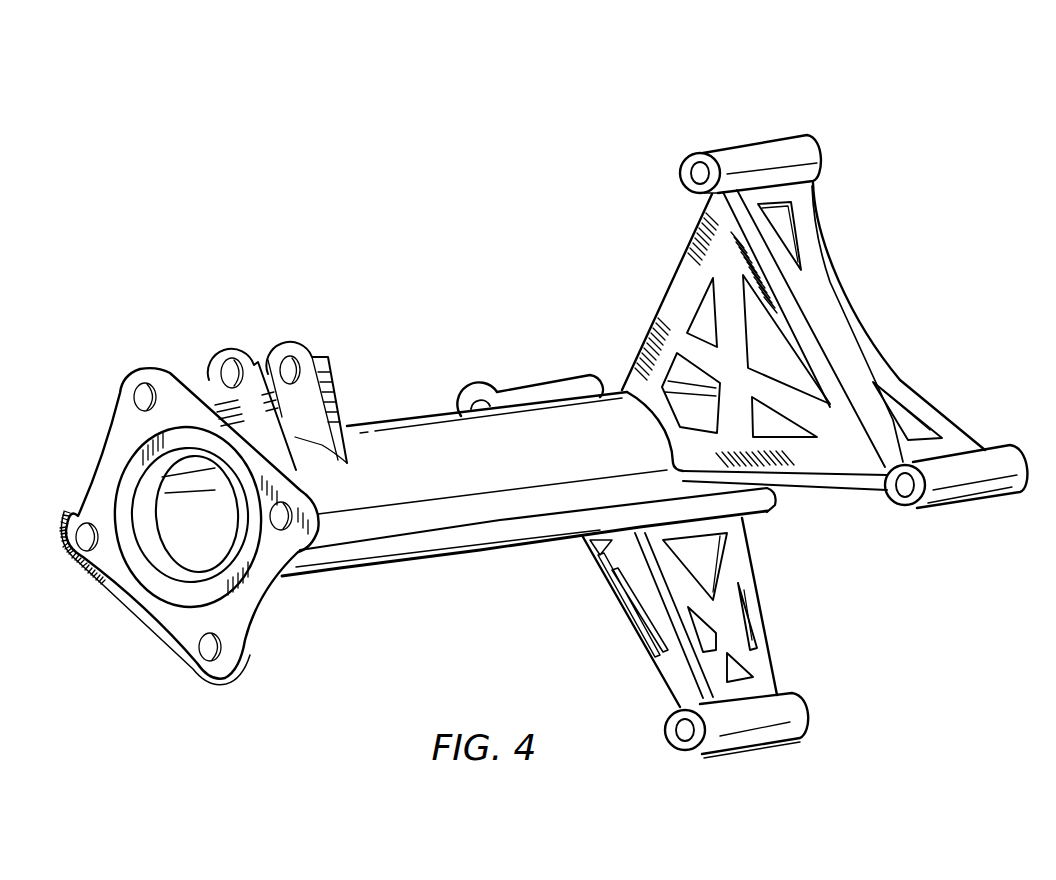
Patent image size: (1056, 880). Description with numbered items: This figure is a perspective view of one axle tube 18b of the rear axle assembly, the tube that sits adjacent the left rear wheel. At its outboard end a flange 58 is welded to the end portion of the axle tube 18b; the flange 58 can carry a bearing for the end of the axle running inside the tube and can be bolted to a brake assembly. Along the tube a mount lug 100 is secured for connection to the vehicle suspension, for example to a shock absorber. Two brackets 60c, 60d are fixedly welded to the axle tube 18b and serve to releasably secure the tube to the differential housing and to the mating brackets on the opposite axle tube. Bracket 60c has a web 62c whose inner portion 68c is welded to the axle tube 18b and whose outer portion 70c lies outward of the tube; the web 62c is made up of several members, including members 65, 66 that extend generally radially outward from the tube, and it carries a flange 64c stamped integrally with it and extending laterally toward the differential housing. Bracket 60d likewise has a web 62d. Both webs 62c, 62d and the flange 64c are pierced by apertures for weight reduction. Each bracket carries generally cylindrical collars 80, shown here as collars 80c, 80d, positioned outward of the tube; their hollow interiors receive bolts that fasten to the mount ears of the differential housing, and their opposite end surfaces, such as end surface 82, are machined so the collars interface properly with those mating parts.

The axle tube 18b is at (392, 570).
The flange 58 is at (147, 612).
The bracket 60c is at (799, 378).
The bracket 60d is at (711, 612).
The web 62c is at (841, 495).
The web 62d is at (626, 630).
The flange 64c is at (820, 291).
The member 65 is at (858, 493).
The member 66 is at (817, 460).
The inner portion 68c is at (615, 376).
The outer portion 70c is at (690, 206).
The collar 80 is at (528, 378).
The collar 80c is at (753, 137).
The collar 80d is at (963, 510).
The end surface 82 is at (468, 402).
The mount lug 100 is at (290, 350).